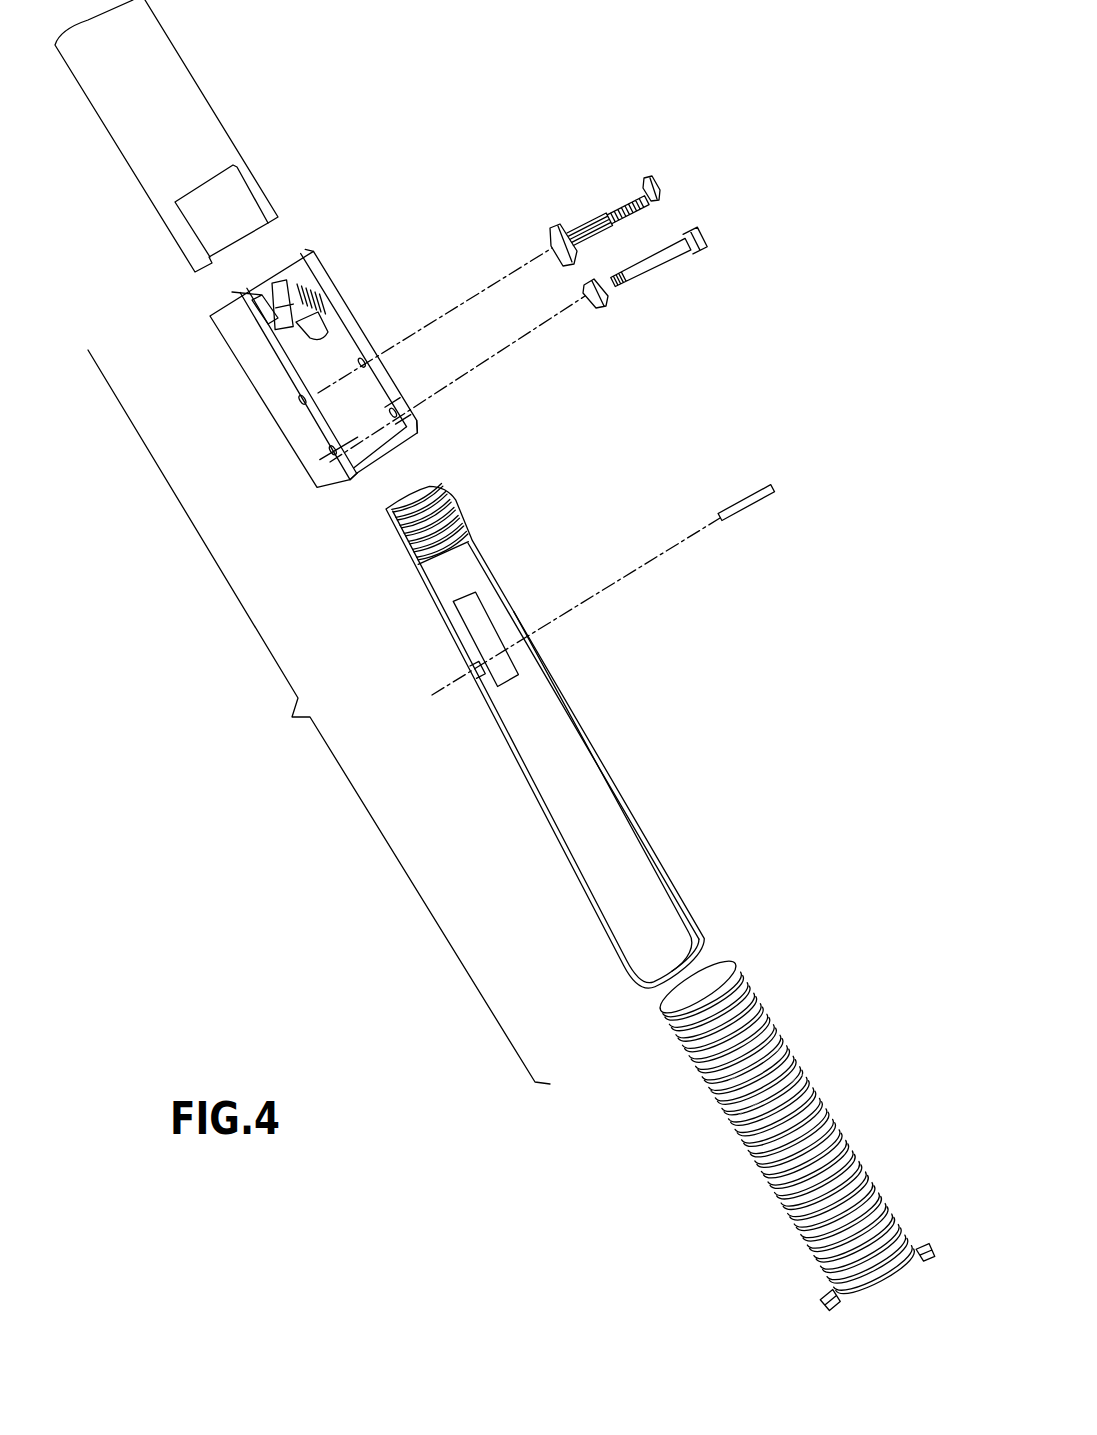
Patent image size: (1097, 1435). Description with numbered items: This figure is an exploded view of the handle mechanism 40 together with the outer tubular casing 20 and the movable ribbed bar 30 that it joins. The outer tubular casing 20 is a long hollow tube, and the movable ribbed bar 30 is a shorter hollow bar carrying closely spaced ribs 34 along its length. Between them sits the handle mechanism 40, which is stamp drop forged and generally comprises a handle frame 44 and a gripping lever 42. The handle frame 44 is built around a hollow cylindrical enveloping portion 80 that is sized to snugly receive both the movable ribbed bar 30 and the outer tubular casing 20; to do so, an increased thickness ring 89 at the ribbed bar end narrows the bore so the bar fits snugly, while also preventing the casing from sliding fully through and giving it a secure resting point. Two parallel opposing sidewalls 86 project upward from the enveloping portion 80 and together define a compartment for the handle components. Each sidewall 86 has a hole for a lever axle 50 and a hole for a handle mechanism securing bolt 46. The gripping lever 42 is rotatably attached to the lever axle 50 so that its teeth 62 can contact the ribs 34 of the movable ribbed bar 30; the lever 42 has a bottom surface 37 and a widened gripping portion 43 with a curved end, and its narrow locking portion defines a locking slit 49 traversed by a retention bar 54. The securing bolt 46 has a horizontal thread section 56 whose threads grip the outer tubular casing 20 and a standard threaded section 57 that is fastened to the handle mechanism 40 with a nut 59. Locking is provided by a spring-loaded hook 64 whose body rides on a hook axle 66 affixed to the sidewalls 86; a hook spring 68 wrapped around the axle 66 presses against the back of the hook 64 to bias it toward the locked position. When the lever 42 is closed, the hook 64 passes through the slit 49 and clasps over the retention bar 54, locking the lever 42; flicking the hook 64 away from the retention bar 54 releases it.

The outer tubular casing 20 is at (198, 118).
The movable ribbed bar 30 is at (813, 1107).
The ribs 34 is at (707, 1082).
The bottom surface 37 is at (548, 740).
The handle mechanism 40 is at (227, 358).
The gripping lever 42 is at (605, 810).
The widened gripping portion 43 is at (653, 883).
The handle frame 44 is at (275, 417).
The handle mechanism securing bolt 46 is at (552, 228).
The locking slit 49 is at (473, 613).
The lever axle 50 is at (657, 260).
The retention bar 54 is at (755, 503).
The horizontal thread section 56 is at (585, 217).
The standard threaded section 57 is at (623, 205).
The nut 59 is at (658, 180).
The teeth 62 is at (467, 537).
The hook 64 is at (282, 274).
The hook axle 66 is at (277, 318).
The hook spring 68 is at (303, 270).
The hollow cylindrical enveloping portion 80 is at (360, 325).
The sidewalls 86 is at (417, 440).
The increased thickness ring 89 is at (380, 448).